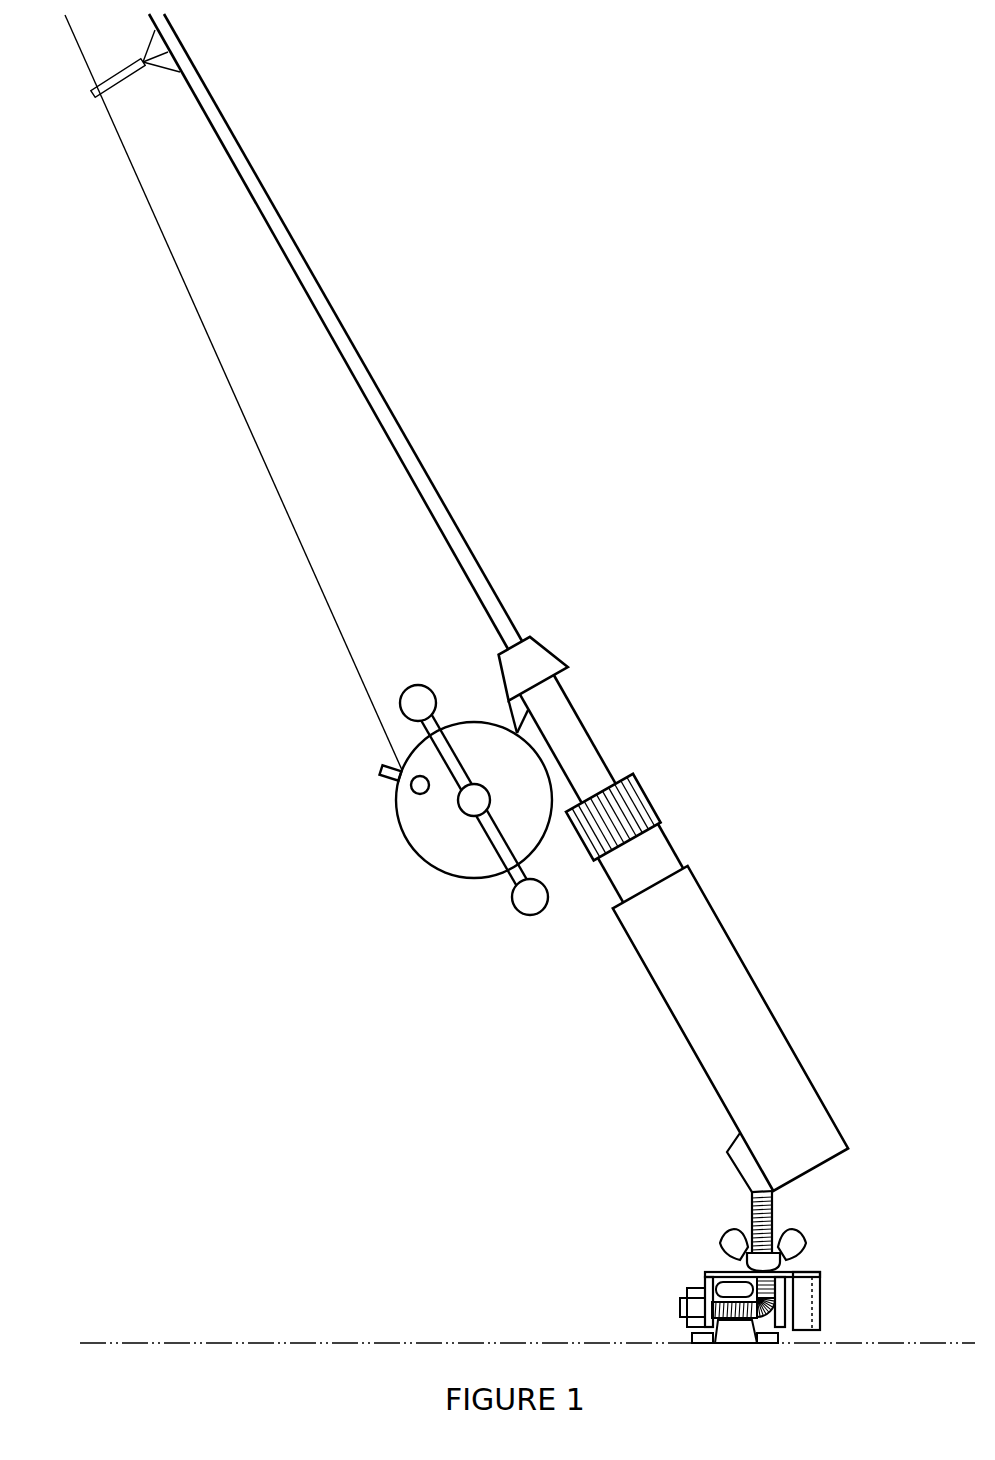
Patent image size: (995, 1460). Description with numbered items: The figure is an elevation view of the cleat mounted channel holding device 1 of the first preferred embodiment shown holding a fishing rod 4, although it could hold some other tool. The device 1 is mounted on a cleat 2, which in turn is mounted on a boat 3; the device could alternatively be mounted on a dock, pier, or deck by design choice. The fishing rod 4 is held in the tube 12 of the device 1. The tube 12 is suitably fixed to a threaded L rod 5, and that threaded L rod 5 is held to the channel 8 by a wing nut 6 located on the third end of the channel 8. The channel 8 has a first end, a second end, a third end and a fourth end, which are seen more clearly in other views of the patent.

The cleat mounted channel holding device 1 is at (686, 990).
The cleat 2 is at (705, 1275).
The boat 3 is at (590, 1343).
The fishing rod 4 is at (455, 524).
The threaded L rod 5 is at (775, 1303).
The wing nut 6 is at (738, 1233).
The channel 8 is at (715, 1270).
The tube 12 is at (772, 1008).